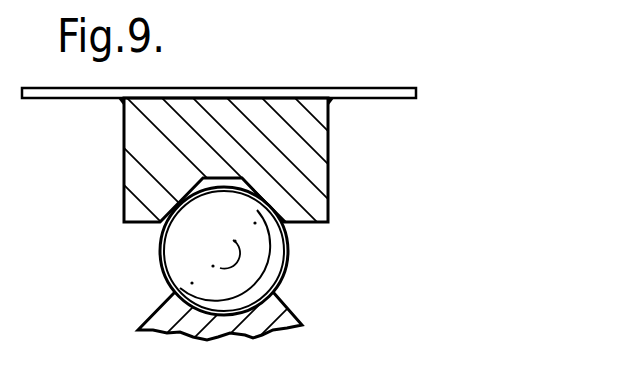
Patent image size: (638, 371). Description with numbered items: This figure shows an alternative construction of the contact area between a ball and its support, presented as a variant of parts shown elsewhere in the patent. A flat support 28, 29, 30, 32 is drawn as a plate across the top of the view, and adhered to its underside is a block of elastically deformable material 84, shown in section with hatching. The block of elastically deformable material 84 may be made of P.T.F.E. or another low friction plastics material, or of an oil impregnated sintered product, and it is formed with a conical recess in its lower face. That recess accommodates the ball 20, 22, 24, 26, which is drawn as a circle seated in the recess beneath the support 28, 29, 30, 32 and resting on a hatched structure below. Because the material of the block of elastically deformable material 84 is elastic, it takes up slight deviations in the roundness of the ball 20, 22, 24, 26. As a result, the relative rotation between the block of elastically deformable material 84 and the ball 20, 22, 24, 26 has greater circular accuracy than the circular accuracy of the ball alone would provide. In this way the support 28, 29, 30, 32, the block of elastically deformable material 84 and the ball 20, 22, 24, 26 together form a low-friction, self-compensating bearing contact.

The ball 20 is at (325, 268).
The ball 22 is at (325, 268).
The ball 24 is at (325, 268).
The ball 26 is at (252, 246).
The support 28 is at (297, 126).
The support 29 is at (297, 126).
The support 30 is at (297, 126).
The support 32 is at (388, 98).
The block of elastically deformable material 84 is at (125, 165).